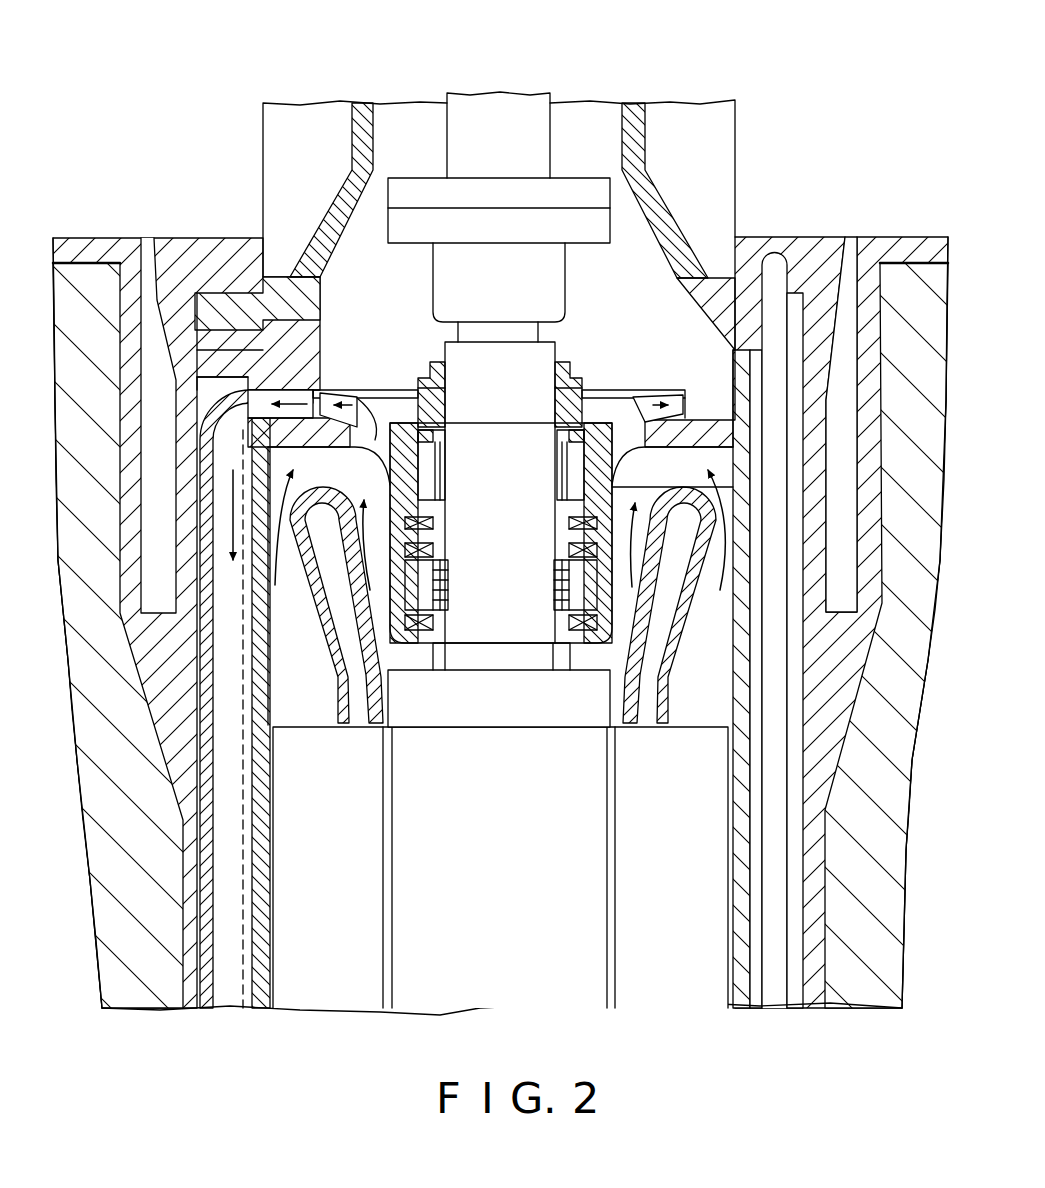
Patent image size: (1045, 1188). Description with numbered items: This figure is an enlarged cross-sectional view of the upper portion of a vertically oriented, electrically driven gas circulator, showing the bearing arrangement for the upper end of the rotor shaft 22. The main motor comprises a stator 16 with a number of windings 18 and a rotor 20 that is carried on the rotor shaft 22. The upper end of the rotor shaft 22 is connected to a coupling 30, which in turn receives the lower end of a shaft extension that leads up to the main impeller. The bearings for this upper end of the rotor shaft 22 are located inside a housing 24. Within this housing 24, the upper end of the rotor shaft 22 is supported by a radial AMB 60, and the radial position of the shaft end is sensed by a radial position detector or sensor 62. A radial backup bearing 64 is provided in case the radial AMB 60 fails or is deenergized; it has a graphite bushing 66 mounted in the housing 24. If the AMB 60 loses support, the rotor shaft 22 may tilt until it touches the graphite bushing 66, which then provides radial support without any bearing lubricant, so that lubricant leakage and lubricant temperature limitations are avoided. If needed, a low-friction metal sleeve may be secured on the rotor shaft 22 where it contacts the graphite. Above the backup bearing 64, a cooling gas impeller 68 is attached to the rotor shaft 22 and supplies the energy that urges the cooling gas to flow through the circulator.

The stator 16 is at (700, 838).
The windings 18 is at (678, 652).
The rotor 20 is at (497, 718).
The rotor shaft 22 is at (540, 328).
The housing 24 is at (598, 660).
The coupling 30 is at (595, 212).
The radial AMB 60 is at (580, 570).
The radial position detector 62 is at (577, 522).
The radial backup bearing 64 is at (570, 466).
The graphite bushing 66 is at (437, 470).
The cooling gas impeller 68 is at (330, 395).